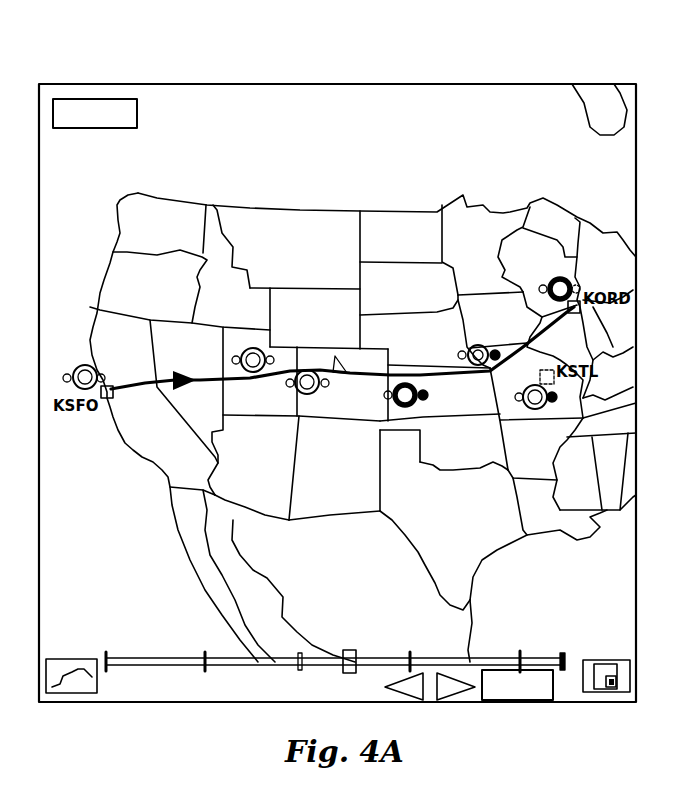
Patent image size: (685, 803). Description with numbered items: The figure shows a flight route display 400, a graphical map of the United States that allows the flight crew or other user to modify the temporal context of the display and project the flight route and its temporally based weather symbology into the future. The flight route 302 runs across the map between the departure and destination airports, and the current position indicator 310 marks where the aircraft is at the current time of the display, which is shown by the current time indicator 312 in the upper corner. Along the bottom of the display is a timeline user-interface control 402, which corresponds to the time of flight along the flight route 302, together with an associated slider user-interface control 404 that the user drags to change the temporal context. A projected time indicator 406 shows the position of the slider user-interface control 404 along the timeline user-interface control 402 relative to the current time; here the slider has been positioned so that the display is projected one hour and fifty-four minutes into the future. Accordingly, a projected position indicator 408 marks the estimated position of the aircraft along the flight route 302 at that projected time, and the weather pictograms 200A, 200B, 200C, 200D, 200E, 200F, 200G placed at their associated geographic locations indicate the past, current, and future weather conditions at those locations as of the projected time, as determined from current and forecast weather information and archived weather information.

The flight route display 400 is at (76, 76).
The current time indicator 312 is at (78, 130).
The current position indicator 310 is at (191, 373).
The flight route 302 is at (407, 383).
The projected position indicator 408 is at (340, 381).
The weather pictogram 200A is at (74, 368).
The weather pictogram 200B is at (550, 281).
The weather pictogram 200C is at (536, 410).
The weather pictogram 200D is at (250, 347).
The weather pictogram 200E is at (310, 394).
The weather pictogram 200F is at (425, 394).
The weather pictogram 200G is at (490, 345).
The timeline user-interface control 402 is at (144, 655).
The slider user-interface control 404 is at (351, 650).
The projected time indicator 406 is at (535, 670).